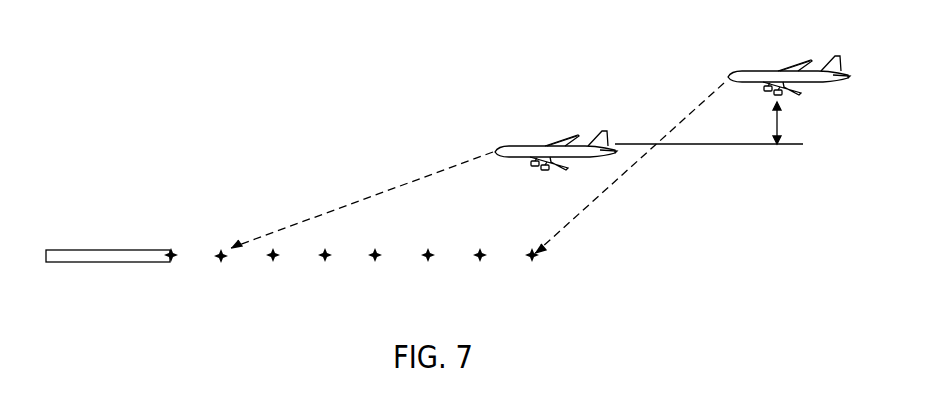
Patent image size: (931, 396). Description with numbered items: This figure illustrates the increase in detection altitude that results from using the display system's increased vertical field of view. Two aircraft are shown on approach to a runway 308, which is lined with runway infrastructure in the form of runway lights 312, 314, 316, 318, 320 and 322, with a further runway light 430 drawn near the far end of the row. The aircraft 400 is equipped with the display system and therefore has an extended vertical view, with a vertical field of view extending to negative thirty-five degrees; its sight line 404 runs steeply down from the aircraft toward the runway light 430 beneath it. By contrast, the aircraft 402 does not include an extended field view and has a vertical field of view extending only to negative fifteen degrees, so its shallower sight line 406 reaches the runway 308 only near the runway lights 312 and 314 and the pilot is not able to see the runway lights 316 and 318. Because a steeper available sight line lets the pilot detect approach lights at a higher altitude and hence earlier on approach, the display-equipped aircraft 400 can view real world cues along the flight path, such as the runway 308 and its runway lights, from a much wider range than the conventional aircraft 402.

The runway 308 is at (62, 250).
The runway light 312 is at (174, 250).
The runway light 314 is at (221, 251).
The runway light 316 is at (273, 260).
The runway light 318 is at (325, 260).
The runway light 320 is at (377, 252).
The runway light 322 is at (429, 251).
The aircraft 400 is at (752, 72).
The aircraft 402 is at (520, 148).
The sight line 404 is at (672, 132).
The sight line 406 is at (323, 212).
The waypoint 430 is at (531, 260).